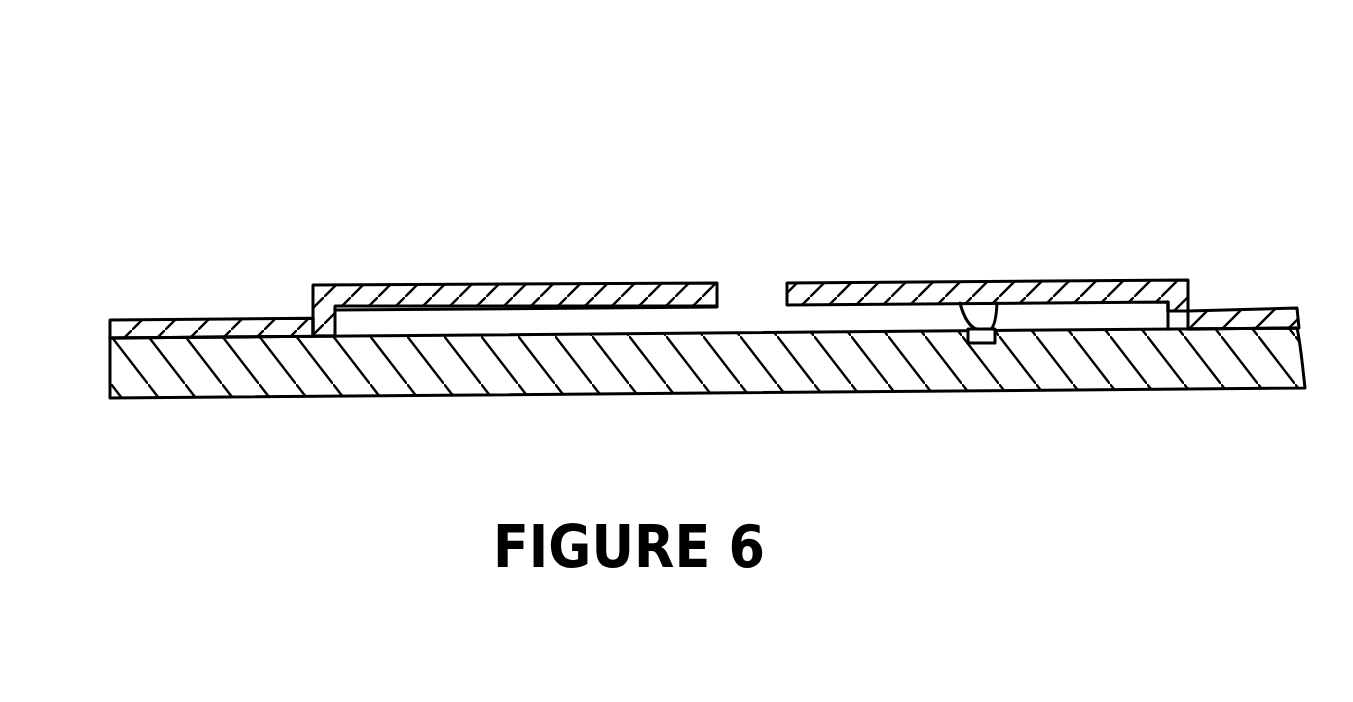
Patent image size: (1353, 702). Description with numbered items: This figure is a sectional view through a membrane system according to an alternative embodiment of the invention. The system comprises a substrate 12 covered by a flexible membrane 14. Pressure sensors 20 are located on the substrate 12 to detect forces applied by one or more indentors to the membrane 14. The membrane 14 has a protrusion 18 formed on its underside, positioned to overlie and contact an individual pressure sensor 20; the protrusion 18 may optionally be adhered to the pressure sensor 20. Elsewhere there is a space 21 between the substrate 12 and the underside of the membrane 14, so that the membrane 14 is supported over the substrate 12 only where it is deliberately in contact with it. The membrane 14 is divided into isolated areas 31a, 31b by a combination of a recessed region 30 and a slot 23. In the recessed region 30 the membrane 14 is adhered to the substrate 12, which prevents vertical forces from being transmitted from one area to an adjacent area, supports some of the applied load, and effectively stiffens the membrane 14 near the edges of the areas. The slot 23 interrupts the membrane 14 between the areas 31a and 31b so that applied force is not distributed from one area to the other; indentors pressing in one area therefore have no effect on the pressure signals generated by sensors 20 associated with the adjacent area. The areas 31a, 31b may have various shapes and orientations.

The substrate 12 is at (288, 380).
The membrane 14 is at (403, 283).
The protrusion 18 is at (997, 314).
The pressure sensor 20 is at (980, 343).
The space 21 is at (457, 325).
The slot 23 is at (745, 302).
The recessed region 30 is at (1258, 301).
The isolated area 31a is at (563, 266).
The isolated area 31b is at (844, 262).